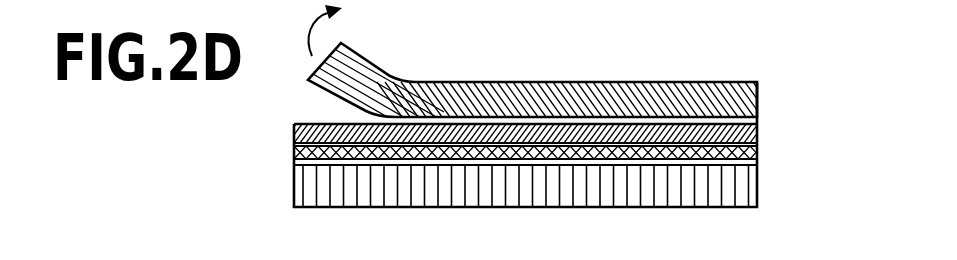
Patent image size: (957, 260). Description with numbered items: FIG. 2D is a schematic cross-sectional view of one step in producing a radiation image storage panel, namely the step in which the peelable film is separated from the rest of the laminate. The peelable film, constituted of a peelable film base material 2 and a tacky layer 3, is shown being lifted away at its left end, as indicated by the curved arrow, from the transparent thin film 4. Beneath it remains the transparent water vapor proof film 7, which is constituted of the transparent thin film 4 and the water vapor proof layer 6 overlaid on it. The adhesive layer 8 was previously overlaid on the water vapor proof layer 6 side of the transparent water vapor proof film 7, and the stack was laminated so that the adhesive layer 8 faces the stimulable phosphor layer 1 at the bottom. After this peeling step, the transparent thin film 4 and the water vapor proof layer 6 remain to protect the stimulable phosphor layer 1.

The stimulable phosphor layer 1 is at (757, 188).
The peelable film base material 2 is at (757, 105).
The tacky layer 3 is at (757, 123).
The transparent thin film 4 is at (757, 135).
The water vapor proof layer 6 is at (757, 152).
The transparent water vapor proof film 7 is at (576, 153).
The adhesive layer 8 is at (757, 162).